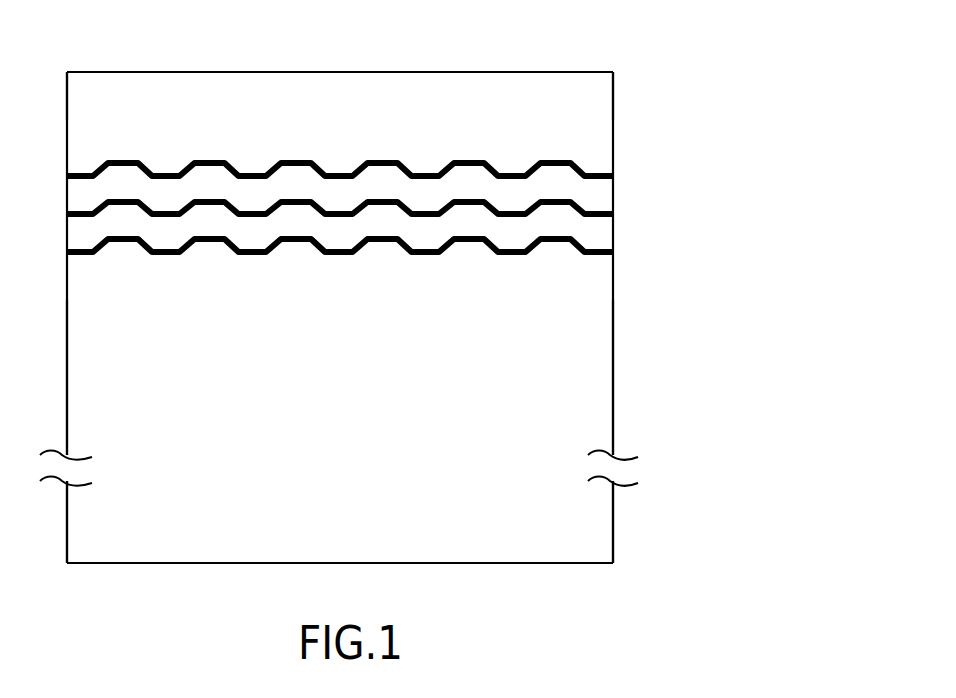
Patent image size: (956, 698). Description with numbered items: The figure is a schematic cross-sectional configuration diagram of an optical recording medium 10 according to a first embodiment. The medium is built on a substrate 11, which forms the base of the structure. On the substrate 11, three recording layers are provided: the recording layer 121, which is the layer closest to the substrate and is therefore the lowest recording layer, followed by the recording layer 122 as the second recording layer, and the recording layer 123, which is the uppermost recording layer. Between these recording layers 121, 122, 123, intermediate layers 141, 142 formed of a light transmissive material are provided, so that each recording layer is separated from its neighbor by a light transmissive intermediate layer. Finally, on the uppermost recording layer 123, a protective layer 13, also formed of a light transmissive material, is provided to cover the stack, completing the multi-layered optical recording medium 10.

The optical recording medium 10 is at (675, 43).
The substrate 11 is at (580, 378).
The protective layer 13 is at (597, 101).
The recording layer (L0) 121 is at (613, 243).
The recording layer (L1) 122 is at (598, 208).
The recording layer (L2) 123 is at (598, 170).
The intermediate layer 141 is at (592, 230).
The intermediate layer 142 is at (597, 191).